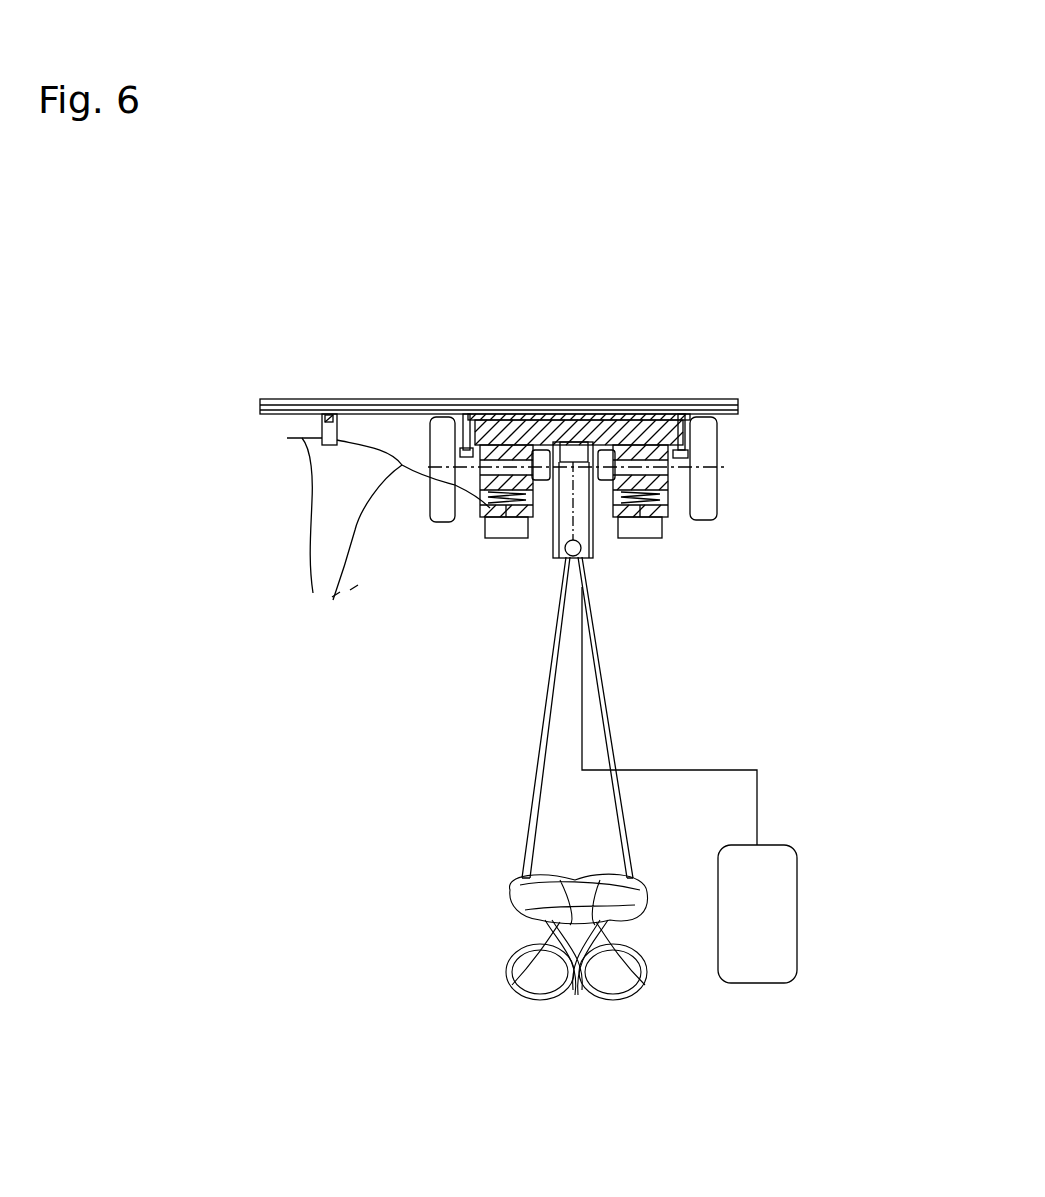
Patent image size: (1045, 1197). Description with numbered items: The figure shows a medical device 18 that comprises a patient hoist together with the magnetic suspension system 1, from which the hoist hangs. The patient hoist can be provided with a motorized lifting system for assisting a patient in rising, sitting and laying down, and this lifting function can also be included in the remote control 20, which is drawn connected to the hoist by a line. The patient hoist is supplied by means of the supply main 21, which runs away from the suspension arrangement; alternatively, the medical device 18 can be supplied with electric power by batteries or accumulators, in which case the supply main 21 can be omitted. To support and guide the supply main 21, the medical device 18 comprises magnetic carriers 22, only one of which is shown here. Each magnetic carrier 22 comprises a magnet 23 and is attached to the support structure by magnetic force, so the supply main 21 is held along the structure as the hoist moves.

The magnetic suspension system 1 is at (632, 328).
The medical device 18 is at (627, 737).
The remote control 20 is at (768, 917).
The supply main 21 is at (562, 523).
The magnetic carrier 22 is at (320, 430).
The magnet 23 is at (323, 418).